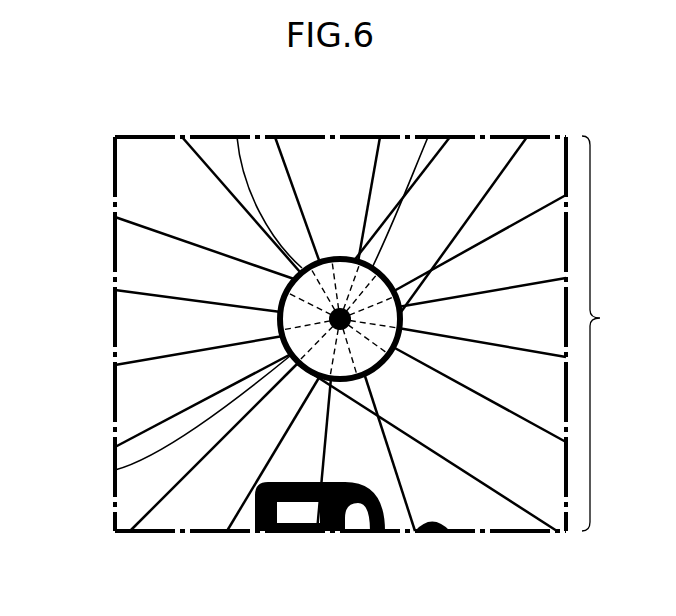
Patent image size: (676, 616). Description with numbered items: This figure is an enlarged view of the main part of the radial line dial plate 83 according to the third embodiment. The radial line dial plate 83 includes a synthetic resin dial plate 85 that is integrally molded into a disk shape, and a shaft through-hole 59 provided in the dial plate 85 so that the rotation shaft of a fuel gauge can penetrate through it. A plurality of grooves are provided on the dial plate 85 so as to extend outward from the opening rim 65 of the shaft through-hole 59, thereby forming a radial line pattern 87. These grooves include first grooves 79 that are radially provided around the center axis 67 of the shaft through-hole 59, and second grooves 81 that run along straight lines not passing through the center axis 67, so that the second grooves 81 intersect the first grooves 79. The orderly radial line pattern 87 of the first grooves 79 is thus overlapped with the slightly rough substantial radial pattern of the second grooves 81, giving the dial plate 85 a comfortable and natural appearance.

The shaft through-hole 59 is at (115, 470).
The opening rim 65 is at (258, 190).
The center axis 67 is at (428, 137).
The first grooves 79 is at (225, 178).
The second grooves 81 is at (182, 237).
The radial line dial plate 83 is at (106, 152).
The dial plate 85 is at (518, 520).
The radial line pattern 87 is at (605, 333).